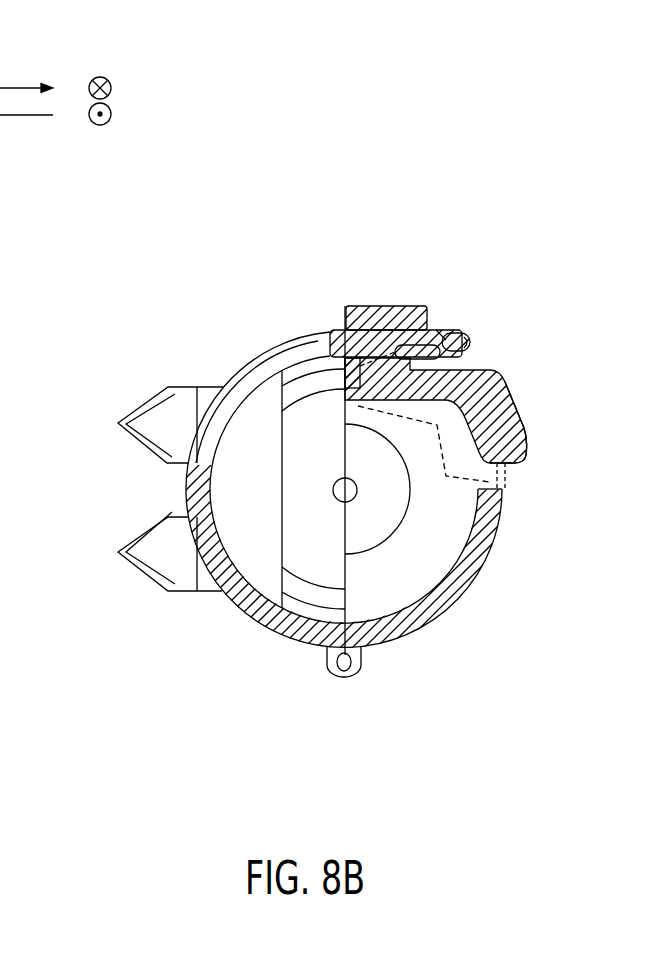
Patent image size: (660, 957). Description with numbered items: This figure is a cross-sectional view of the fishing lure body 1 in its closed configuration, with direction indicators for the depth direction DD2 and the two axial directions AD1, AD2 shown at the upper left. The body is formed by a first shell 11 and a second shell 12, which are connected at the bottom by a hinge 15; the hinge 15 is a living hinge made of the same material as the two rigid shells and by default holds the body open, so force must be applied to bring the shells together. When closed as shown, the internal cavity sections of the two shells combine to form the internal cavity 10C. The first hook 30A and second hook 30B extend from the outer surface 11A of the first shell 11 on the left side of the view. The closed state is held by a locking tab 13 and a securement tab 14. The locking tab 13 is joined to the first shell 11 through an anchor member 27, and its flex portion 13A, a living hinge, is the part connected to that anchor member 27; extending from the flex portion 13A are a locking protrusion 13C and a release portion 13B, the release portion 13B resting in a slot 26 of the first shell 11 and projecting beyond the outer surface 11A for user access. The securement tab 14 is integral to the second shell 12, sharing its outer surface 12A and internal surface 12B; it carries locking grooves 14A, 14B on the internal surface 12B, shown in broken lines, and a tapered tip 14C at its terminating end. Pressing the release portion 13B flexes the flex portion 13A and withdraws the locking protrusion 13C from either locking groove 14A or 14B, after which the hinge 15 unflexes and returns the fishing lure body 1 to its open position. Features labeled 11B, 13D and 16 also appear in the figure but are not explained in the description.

The fishing lure body 1 is at (531, 128).
The internal cavity 10C is at (259, 400).
The first shell 11 is at (330, 498).
The outer surface of first shell 11A is at (492, 572).
The inner surface of housing 11B is at (470, 522).
The second shell 12 is at (276, 426).
The outer surface of second shell 12A is at (238, 592).
The internal surface of second shell 12B is at (268, 610).
The locking tab 13 is at (330, 449).
The flex portion 13A is at (343, 388).
The release portion 13B is at (528, 446).
The locking protrusion 13C is at (398, 352).
The cap notch 13D is at (350, 356).
The securement tab 14 is at (330, 435).
The locking groove 14A is at (464, 338).
The locking groove 14B is at (440, 333).
The tapered tip 14C is at (489, 343).
The hinge 15 is at (330, 690).
The block 16 is at (404, 305).
The slot 26 is at (508, 477).
The anchor member 27 is at (342, 360).
The hook 30A is at (120, 395).
The hook 30B is at (120, 590).
The depth direction DD2 is at (0, 72).
The axial direction AD1 is at (113, 88).
The axial direction AD2 is at (113, 114).